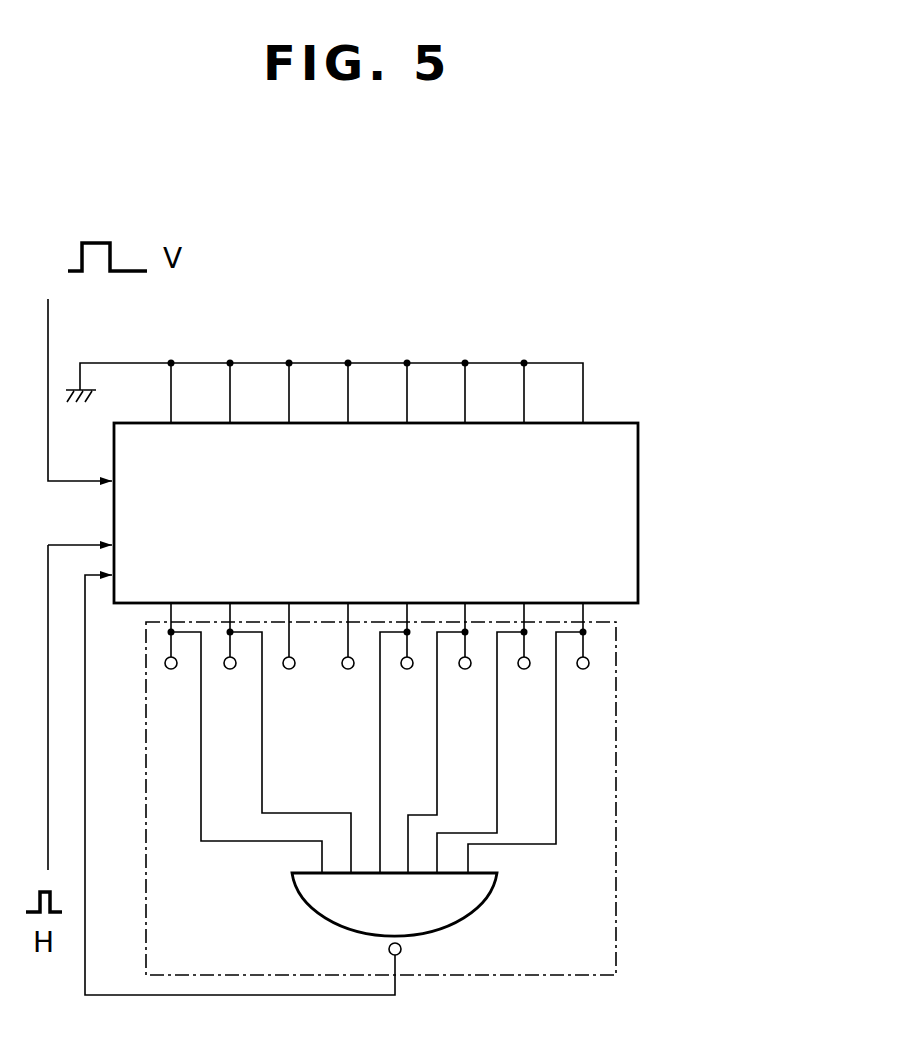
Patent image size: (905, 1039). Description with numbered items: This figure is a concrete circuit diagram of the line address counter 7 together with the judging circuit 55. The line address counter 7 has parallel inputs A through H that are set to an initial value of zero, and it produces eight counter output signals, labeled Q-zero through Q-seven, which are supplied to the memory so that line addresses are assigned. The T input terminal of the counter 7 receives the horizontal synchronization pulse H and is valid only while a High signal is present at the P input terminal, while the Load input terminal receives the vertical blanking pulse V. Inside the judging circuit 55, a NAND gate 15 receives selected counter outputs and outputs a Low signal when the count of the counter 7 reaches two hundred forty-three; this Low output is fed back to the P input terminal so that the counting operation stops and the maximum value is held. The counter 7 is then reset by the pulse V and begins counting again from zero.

The line address counter 7 is at (638, 495).
The judging circuit 55 is at (420, 789).
The NAND gate 15 is at (466, 909).